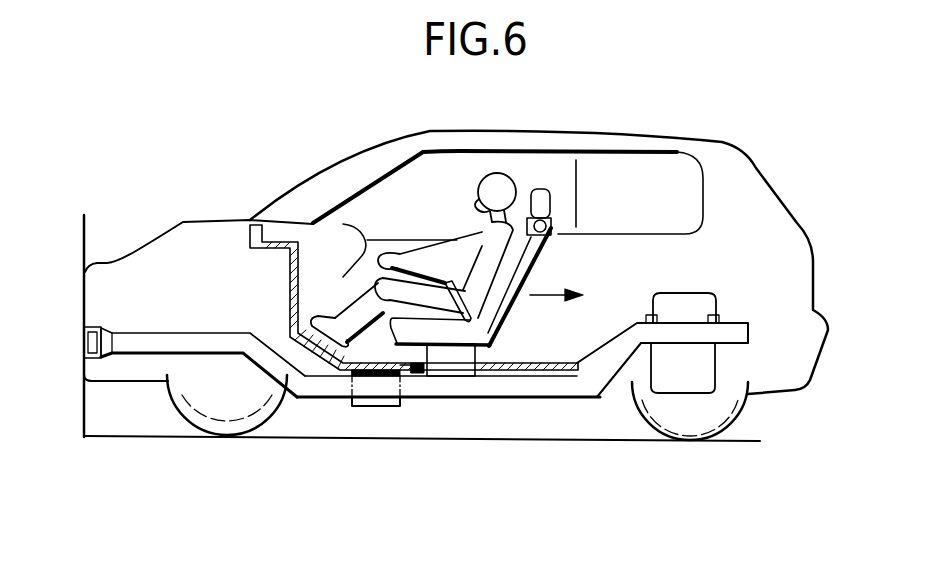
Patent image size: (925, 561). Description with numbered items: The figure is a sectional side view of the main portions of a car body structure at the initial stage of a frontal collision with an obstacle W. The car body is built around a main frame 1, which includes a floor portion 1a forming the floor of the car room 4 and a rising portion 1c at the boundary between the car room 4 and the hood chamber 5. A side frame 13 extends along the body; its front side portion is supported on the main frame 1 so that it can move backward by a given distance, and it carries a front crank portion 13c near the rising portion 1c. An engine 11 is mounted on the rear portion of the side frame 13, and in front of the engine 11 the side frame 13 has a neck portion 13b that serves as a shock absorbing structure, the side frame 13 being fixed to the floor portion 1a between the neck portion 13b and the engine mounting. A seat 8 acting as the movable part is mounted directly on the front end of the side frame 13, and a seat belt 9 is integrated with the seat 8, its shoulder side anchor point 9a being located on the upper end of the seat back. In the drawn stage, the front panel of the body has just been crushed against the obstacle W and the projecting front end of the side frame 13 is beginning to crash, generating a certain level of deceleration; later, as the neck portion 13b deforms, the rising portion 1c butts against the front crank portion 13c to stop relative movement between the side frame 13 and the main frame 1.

The main frame 1 is at (360, 442).
The floor portion 1a is at (403, 374).
The rising portion 1c is at (308, 356).
The car room 4 is at (429, 219).
The hood chamber 5 is at (170, 300).
The seat 8 is at (532, 256).
The seat belt 9 is at (518, 215).
The shoulder side anchor point 9a is at (551, 207).
The engine 11 is at (698, 296).
The side frame 13 is at (137, 345).
The neck portion 13b is at (589, 404).
The front crank portion 13c is at (273, 352).
The obstacle W is at (84, 239).